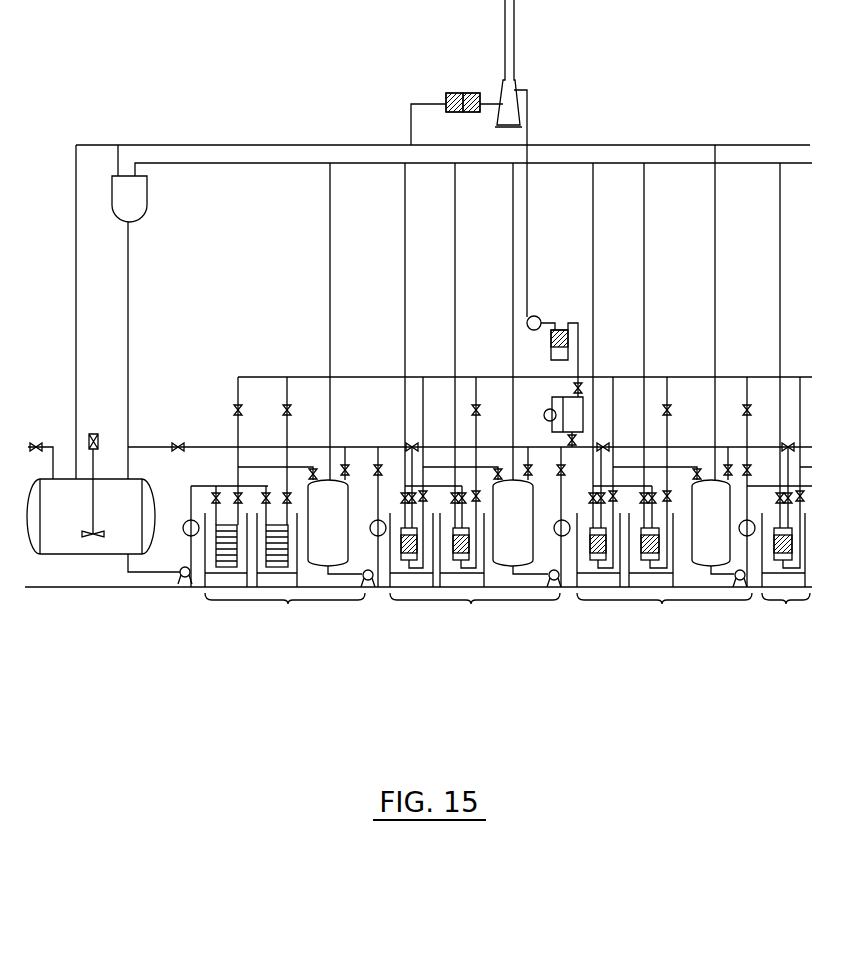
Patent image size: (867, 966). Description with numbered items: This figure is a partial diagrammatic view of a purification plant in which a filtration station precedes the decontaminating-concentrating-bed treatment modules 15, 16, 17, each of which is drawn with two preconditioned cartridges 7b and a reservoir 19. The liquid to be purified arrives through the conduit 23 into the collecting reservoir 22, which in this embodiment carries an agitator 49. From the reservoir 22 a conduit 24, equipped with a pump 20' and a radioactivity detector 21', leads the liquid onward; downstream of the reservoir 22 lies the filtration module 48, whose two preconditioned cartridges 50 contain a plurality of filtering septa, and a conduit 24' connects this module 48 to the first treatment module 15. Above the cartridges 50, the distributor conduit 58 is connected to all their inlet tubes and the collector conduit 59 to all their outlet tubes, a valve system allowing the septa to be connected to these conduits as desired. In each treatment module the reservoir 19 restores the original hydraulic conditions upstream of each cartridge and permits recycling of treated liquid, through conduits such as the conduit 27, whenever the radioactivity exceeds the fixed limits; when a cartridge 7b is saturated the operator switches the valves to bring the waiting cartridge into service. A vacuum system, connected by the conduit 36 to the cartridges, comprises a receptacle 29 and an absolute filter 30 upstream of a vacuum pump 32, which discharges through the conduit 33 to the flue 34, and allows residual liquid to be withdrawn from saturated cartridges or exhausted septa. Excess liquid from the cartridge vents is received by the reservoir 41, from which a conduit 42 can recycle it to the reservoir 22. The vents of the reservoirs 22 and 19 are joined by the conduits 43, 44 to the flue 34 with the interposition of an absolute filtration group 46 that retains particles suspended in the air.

The vent conduit 44 is at (249, 143).
The vent conduit 43 is at (78, 302).
The recycle conduit 42 is at (130, 305).
The reservoir 41 is at (137, 208).
The absolute filtration group 46 is at (467, 92).
The flue 34 is at (518, 89).
The conduit 33 is at (528, 248).
The vacuum pump 32 is at (538, 316).
The absolute filter 30 is at (551, 353).
The conduit 36 is at (350, 376).
The receptacle 29 is at (575, 415).
The conduit 27 is at (379, 446).
The conduit 23 is at (38, 445).
The reservoir 22 is at (71, 520).
The agitator 49 is at (100, 540).
The conduit 24 is at (418, 550).
The radioactivity detector 21' is at (161, 595).
The pump 20' is at (193, 608).
The distributor conduit 58 is at (200, 512).
The collector conduit 59 is at (236, 520).
The filtration module 48 is at (285, 500).
The preconditioned cartridges 50 is at (266, 582).
The reservoir 19 is at (337, 540).
The conduit 24' is at (361, 493).
The treatment module 15 is at (480, 406).
The preconditioned cartridges 7b is at (453, 580).
The treatment module 16 is at (666, 384).
The treatment module 17 is at (779, 393).